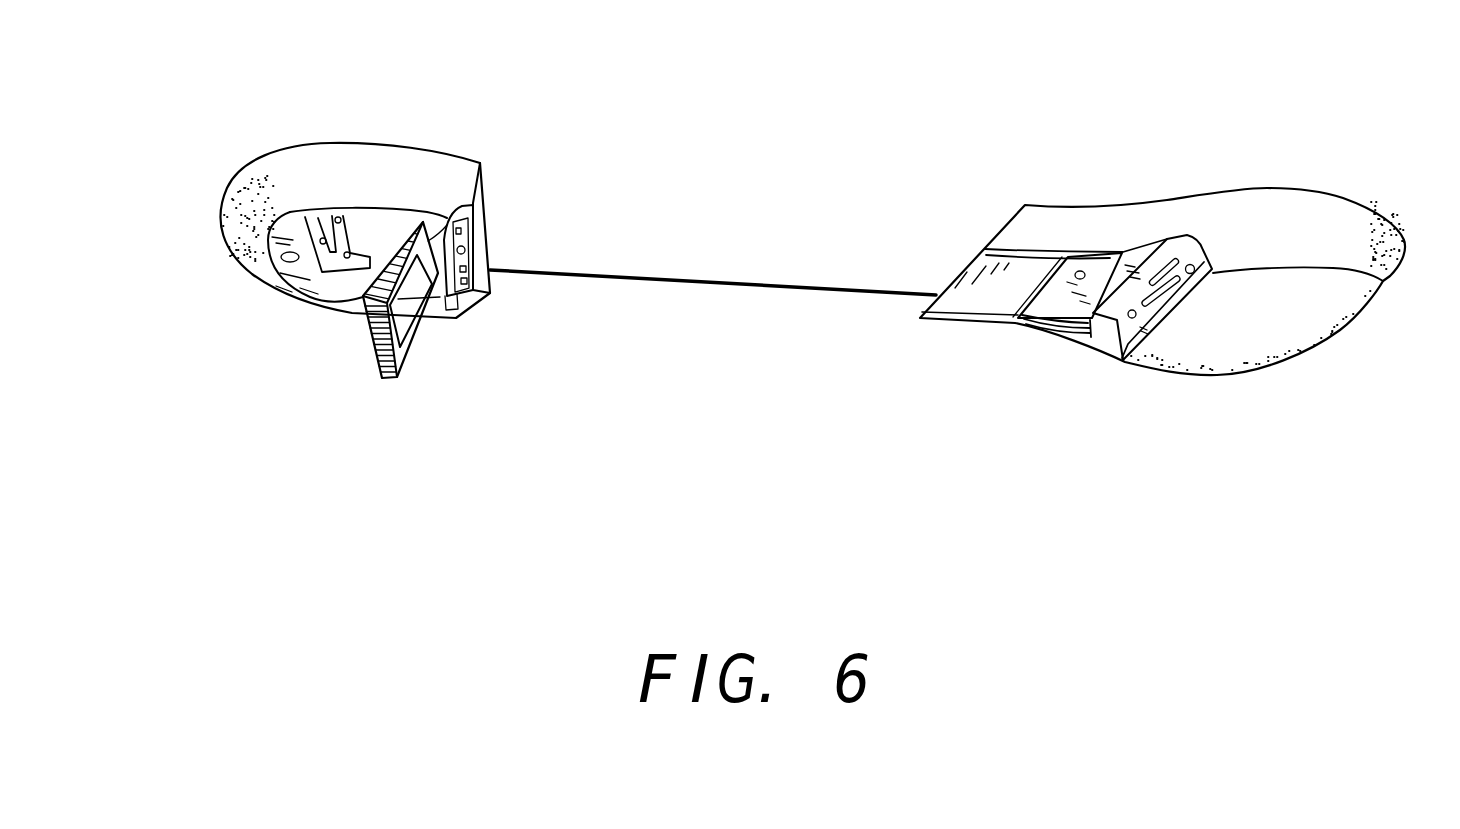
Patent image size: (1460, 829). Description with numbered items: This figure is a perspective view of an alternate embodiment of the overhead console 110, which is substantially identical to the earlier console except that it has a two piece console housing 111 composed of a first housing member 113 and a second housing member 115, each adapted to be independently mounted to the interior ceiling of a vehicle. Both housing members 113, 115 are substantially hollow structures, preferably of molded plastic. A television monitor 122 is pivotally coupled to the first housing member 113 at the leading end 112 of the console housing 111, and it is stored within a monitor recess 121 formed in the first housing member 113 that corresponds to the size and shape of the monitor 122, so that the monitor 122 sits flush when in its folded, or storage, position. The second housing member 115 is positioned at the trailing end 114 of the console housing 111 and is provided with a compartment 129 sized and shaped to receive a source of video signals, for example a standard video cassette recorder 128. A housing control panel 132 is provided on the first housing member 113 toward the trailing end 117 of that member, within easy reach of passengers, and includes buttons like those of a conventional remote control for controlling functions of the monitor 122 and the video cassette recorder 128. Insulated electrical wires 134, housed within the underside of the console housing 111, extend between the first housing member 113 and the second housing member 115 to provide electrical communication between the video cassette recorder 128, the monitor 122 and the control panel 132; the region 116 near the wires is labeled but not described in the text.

The console 110 is at (798, 287).
The console housing 111 is at (1139, 266).
The leading end 112 is at (360, 256).
The first housing member 113 is at (347, 145).
The trailing end 114 is at (1393, 213).
The second housing member 115 is at (1215, 192).
The connector junction 116 is at (578, 241).
The trailing end of the first housing member 117 is at (490, 297).
The monitor recess 121 is at (337, 286).
The television monitor 122 is at (382, 380).
The video cassette recorder 128 is at (1140, 297).
The compartment 129 is at (1124, 360).
The housing control panel 132 is at (462, 232).
The insulated electrical wires 134 is at (763, 287).